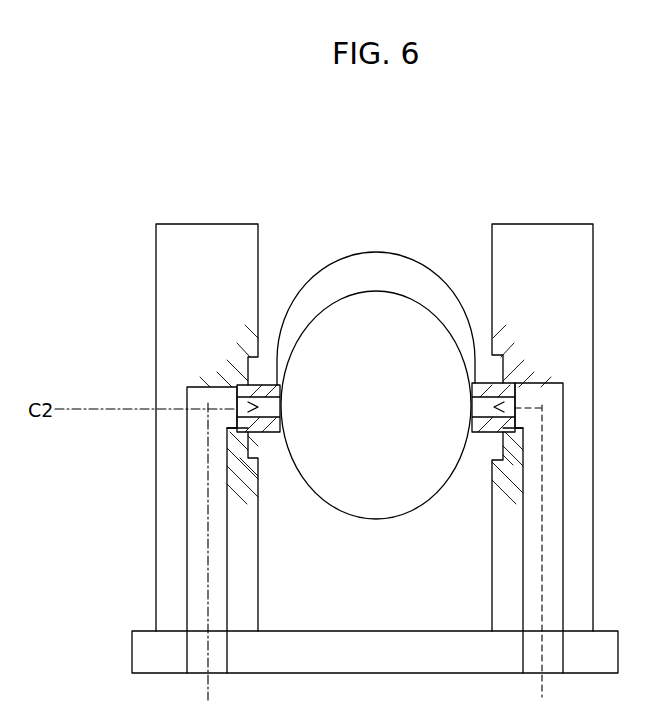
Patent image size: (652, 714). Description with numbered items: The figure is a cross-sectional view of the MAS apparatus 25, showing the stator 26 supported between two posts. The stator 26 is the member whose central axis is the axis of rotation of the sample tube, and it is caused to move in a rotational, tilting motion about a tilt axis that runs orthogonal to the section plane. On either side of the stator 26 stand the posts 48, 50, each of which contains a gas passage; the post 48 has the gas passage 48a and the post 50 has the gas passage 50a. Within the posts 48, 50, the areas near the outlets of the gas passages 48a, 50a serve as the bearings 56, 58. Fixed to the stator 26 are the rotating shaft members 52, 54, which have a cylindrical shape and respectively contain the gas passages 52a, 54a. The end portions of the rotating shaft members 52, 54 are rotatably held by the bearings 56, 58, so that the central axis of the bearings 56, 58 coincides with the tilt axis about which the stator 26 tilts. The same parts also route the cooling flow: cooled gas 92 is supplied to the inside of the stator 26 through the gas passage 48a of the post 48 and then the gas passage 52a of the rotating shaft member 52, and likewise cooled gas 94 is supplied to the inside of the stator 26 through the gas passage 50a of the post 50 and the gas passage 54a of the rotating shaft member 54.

The clamp assembly 25 is at (316, 164).
The stator 26 is at (378, 251).
The post 48 is at (210, 224).
The gas passage 48a is at (187, 496).
The post 50 is at (543, 224).
The gas passage 50a is at (563, 472).
The rotating shaft member 52 is at (266, 385).
The gas passage 52a is at (266, 411).
The rotating shaft member 54 is at (483, 380).
The gas passage 54a is at (487, 411).
The bearing 56 is at (253, 440).
The bearing 58 is at (492, 447).
The cooled gas 92 is at (200, 587).
The cooled gas 94 is at (545, 566).